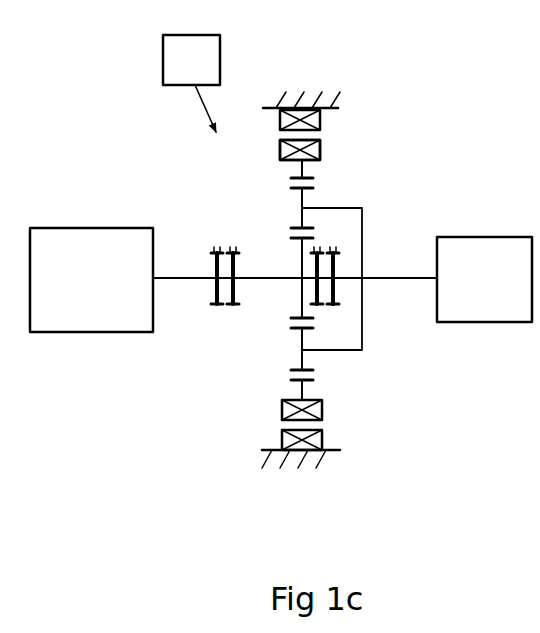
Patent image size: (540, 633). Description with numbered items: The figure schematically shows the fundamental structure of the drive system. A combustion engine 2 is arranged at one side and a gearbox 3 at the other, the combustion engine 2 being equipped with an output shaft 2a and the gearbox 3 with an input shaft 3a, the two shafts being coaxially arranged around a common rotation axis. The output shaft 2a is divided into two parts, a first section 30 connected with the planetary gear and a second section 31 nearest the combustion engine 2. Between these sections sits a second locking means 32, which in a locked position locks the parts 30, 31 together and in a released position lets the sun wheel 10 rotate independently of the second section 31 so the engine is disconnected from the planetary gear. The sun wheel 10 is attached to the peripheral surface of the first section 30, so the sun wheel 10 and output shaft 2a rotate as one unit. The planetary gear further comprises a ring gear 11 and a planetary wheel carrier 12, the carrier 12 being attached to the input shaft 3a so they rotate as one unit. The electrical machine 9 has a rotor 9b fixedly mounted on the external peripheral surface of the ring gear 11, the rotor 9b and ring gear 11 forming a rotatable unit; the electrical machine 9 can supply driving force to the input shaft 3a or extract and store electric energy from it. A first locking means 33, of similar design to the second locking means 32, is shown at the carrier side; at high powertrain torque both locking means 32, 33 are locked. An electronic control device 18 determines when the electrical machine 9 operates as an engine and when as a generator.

The combustion engine 2 is at (83, 332).
The gearbox 3 is at (495, 322).
The output shaft 2a is at (203, 282).
The input shaft 3a is at (402, 278).
The electrical machine 9 is at (340, 126).
The rotor 9b is at (280, 150).
The sun wheel 10 is at (298, 280).
The ring gear 11 is at (313, 170).
The planetary wheel carrier 12 is at (362, 248).
The electronic control device 18 is at (220, 45).
The first section of output shaft 30 is at (268, 276).
The second section of output shaft 31 is at (183, 280).
The second locking means 32 is at (217, 245).
The first locking means 33 is at (338, 233).